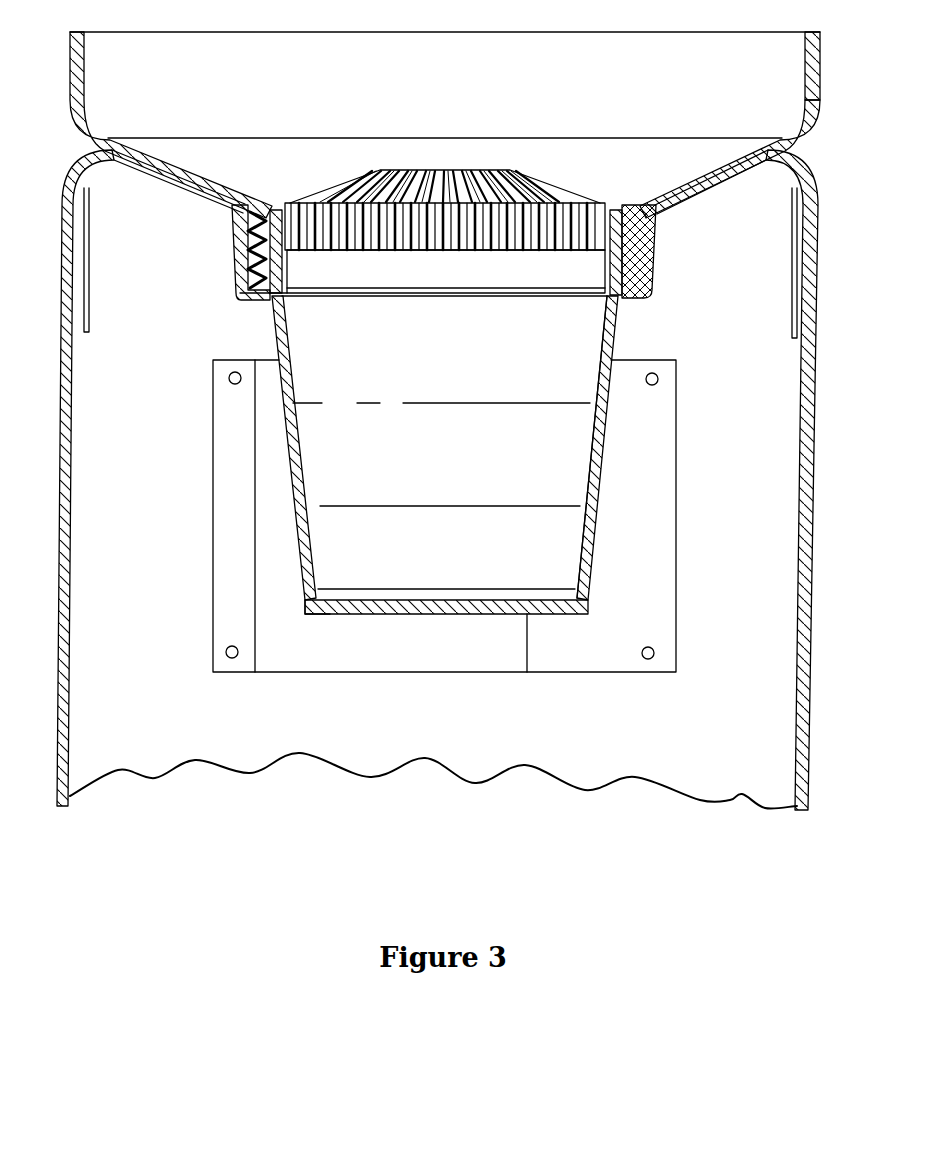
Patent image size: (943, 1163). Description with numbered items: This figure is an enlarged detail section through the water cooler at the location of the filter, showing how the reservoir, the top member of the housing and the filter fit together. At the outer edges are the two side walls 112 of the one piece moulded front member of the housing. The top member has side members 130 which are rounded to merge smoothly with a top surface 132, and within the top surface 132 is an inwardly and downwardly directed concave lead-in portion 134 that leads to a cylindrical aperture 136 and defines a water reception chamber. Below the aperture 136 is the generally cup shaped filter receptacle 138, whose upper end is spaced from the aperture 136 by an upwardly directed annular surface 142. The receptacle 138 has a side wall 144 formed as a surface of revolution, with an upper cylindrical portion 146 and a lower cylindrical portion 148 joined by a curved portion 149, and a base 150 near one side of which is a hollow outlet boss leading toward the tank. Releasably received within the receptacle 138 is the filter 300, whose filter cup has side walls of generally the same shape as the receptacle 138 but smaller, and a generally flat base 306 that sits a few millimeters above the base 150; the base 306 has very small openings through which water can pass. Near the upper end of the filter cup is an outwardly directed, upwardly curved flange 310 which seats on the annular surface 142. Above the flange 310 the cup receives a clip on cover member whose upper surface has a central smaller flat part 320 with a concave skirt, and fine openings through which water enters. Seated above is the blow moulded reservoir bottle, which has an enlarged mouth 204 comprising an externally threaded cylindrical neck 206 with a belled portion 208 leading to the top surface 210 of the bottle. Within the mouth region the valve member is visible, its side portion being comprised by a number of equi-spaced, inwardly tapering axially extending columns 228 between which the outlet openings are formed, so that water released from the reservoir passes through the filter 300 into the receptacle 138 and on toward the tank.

The side walls 112 is at (75, 455).
The side members 130 is at (787, 178).
The top surface 132 is at (697, 172).
The lead-in portion 134 is at (781, 143).
The cylindrical aperture 136 is at (244, 232).
The filter receptacle 138 is at (300, 488).
The annular surface 142 is at (243, 306).
The side wall 144 is at (616, 443).
The upper cylindrical portion 146 is at (619, 366).
The lower cylindrical portion 148 is at (592, 585).
The curved portion 149 is at (603, 473).
The base 150 is at (333, 618).
The mouth 204 is at (620, 203).
The neck 206 is at (251, 218).
The belled portion 208 is at (197, 170).
The top surface 210 is at (113, 156).
The columns 228 is at (338, 195).
The filter 300 is at (574, 435).
The base 306 is at (388, 595).
The flange 310 is at (626, 286).
The central flat part 320 is at (408, 168).